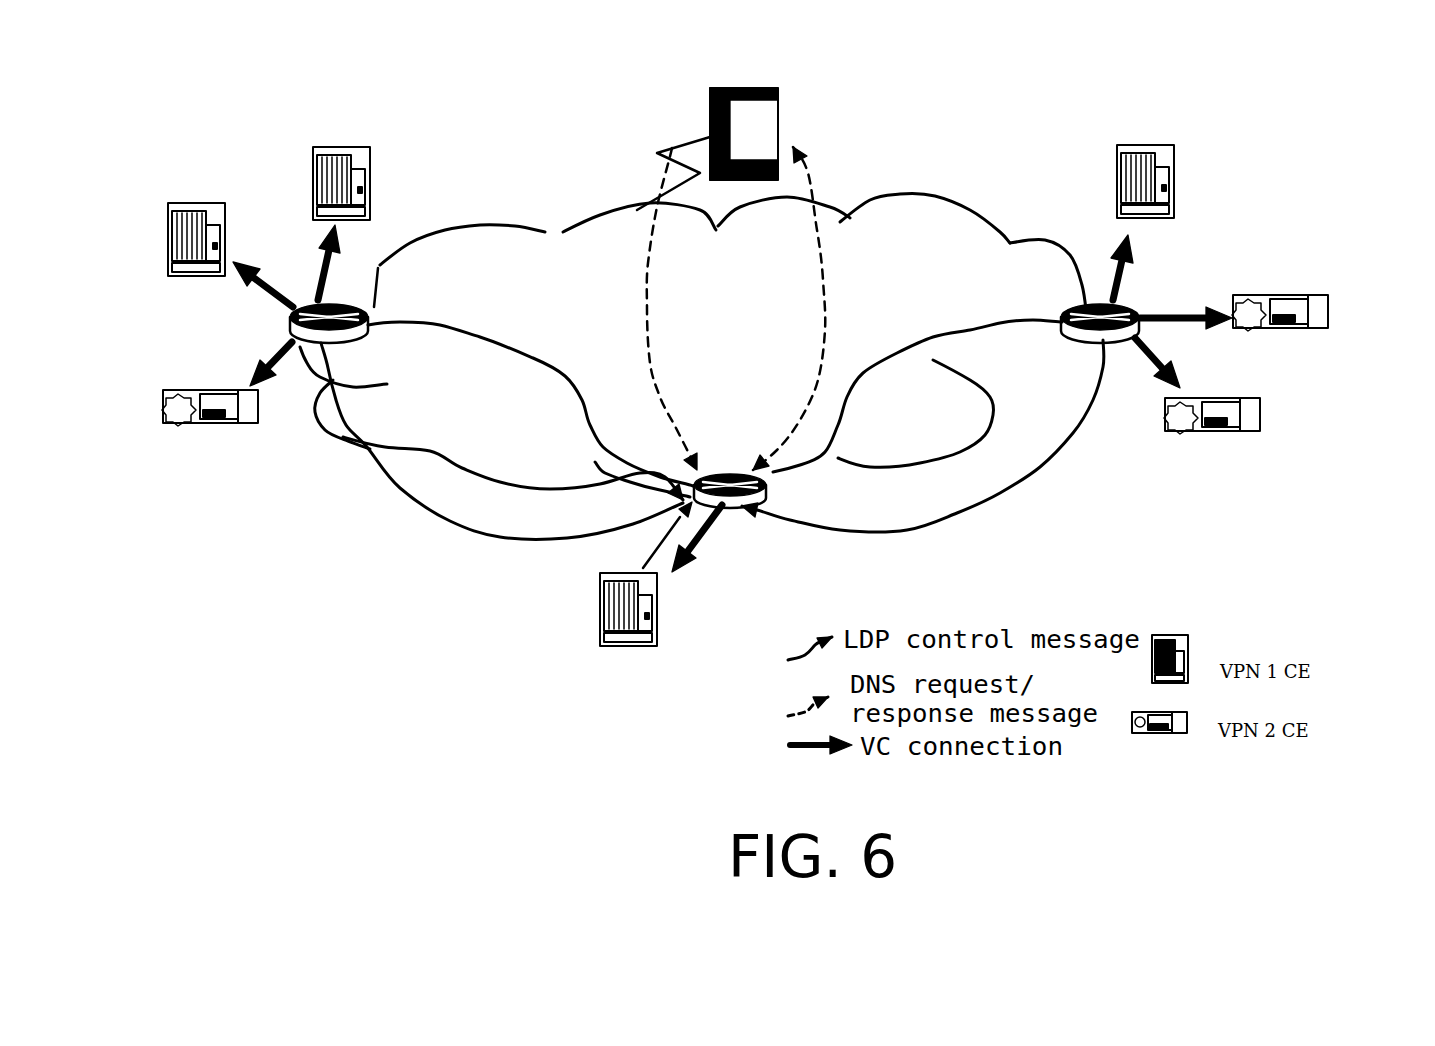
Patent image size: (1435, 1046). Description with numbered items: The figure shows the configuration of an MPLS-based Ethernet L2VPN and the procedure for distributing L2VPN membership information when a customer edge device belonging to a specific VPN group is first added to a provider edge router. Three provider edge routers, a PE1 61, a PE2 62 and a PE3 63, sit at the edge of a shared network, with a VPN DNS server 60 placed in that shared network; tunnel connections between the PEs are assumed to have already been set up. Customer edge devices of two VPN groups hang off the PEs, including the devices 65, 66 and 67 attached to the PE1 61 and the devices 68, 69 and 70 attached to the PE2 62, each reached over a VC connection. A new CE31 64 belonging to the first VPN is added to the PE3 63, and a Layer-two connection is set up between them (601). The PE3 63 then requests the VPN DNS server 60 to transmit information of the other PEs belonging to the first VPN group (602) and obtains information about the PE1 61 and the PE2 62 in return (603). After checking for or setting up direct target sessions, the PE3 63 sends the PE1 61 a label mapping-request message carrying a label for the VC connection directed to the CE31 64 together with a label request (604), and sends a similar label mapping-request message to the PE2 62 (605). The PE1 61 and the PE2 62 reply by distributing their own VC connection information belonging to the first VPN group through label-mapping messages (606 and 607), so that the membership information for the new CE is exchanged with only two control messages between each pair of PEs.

The VPN DNS server 60 is at (773, 110).
The PE1 61 is at (293, 330).
The PE2 62 is at (1137, 297).
The PE3 63 is at (772, 487).
The CE31 64 is at (603, 637).
The CE 11 customer edge device 65 is at (370, 157).
The CE 12 customer edge device 66 is at (192, 203).
The CE 13 customer edge device 67 is at (186, 421).
The CE 21 customer edge device 68 is at (1120, 172).
The CE 22 customer edge device 69 is at (1327, 312).
The CE 23 customer edge device 70 is at (1257, 418).
The Layer-2 connection setup 601 is at (658, 560).
The request to VPN DNS server 602 is at (827, 293).
The PE information response 603 is at (647, 303).
The label mapping-request message to PE1 604 is at (470, 337).
The label mapping-request message to PE2 605 is at (933, 337).
The label-mapping message from PE1 606 is at (403, 500).
The label-mapping message from PE2 607 is at (1060, 463).